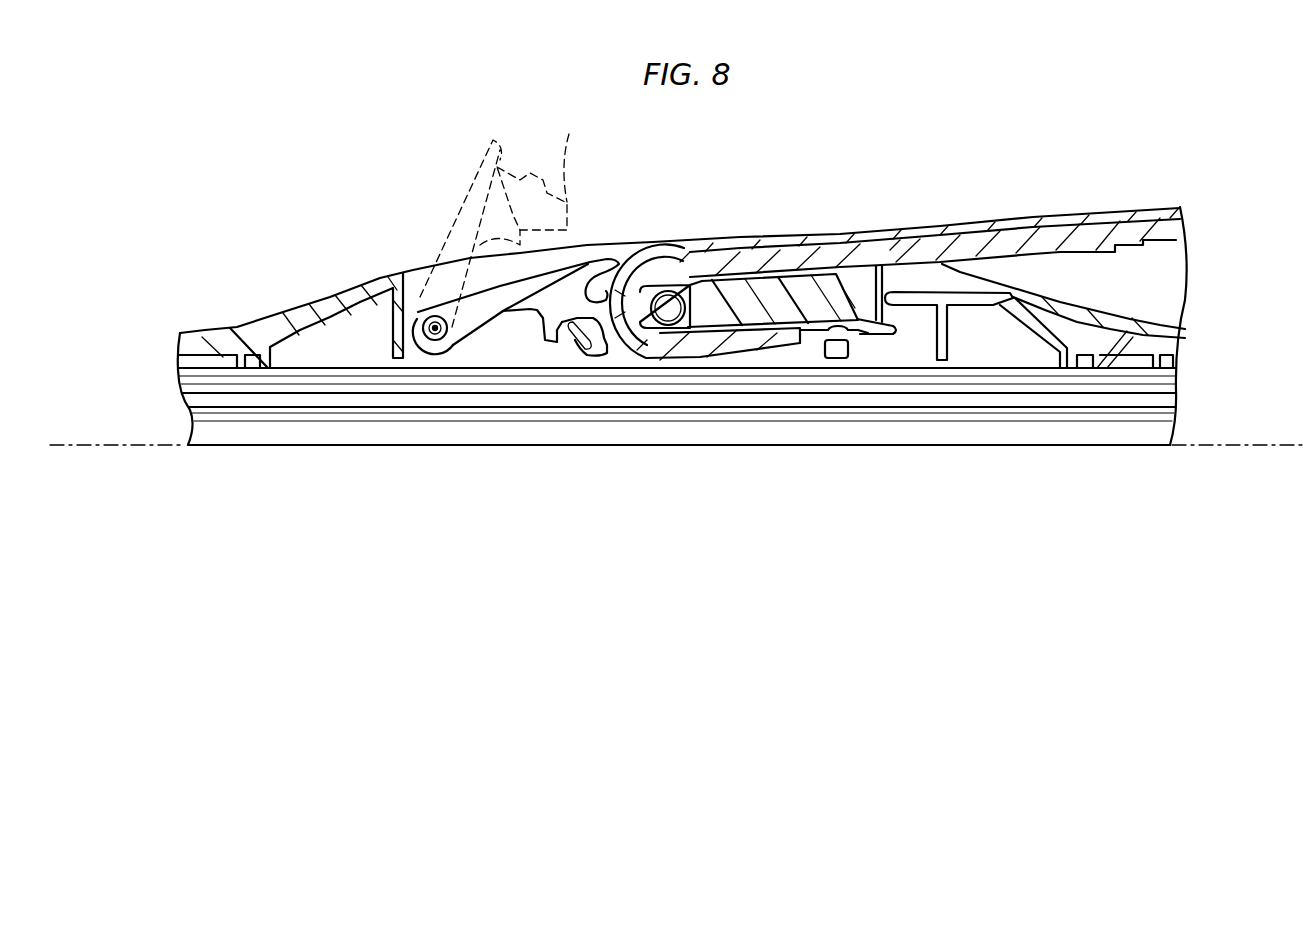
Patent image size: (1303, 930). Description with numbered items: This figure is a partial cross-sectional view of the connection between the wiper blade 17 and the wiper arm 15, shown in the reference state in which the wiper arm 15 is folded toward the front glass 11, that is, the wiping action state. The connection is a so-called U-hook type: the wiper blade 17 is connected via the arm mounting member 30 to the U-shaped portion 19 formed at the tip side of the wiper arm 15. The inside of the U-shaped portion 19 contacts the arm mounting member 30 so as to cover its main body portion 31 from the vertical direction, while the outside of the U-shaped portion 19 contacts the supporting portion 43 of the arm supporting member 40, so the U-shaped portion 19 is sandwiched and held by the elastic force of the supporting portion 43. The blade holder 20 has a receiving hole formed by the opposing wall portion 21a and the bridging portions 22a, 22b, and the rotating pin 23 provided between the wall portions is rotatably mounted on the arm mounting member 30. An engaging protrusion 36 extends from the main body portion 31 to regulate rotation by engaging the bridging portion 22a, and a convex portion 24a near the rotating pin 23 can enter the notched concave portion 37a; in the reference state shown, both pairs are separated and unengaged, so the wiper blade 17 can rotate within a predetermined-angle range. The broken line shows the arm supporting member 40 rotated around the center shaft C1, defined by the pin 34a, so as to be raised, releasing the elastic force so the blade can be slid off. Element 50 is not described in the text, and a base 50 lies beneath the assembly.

The front glass 11 is at (107, 445).
The wiper arm 15 is at (1045, 242).
The wiper blade 17 is at (274, 281).
The U-shaped portion 19 is at (620, 342).
The blade holder 20 is at (1140, 343).
The opposing wall portion 21a is at (873, 345).
The bridging portion 22a is at (898, 298).
The bridging portion 22b is at (328, 300).
The rotating pin 23 is at (668, 302).
The convex portion 24a is at (838, 360).
The arm mounting member 30 is at (782, 329).
The main body portion 31 is at (735, 310).
The pin 34a is at (430, 340).
The engaging protrusion 36 is at (885, 340).
The concave portion 37a is at (840, 334).
The arm supporting member 40 is at (482, 168).
The supporting portion 43 is at (602, 456).
The base plate 50 is at (297, 441).
The center shaft C1 is at (434, 325).